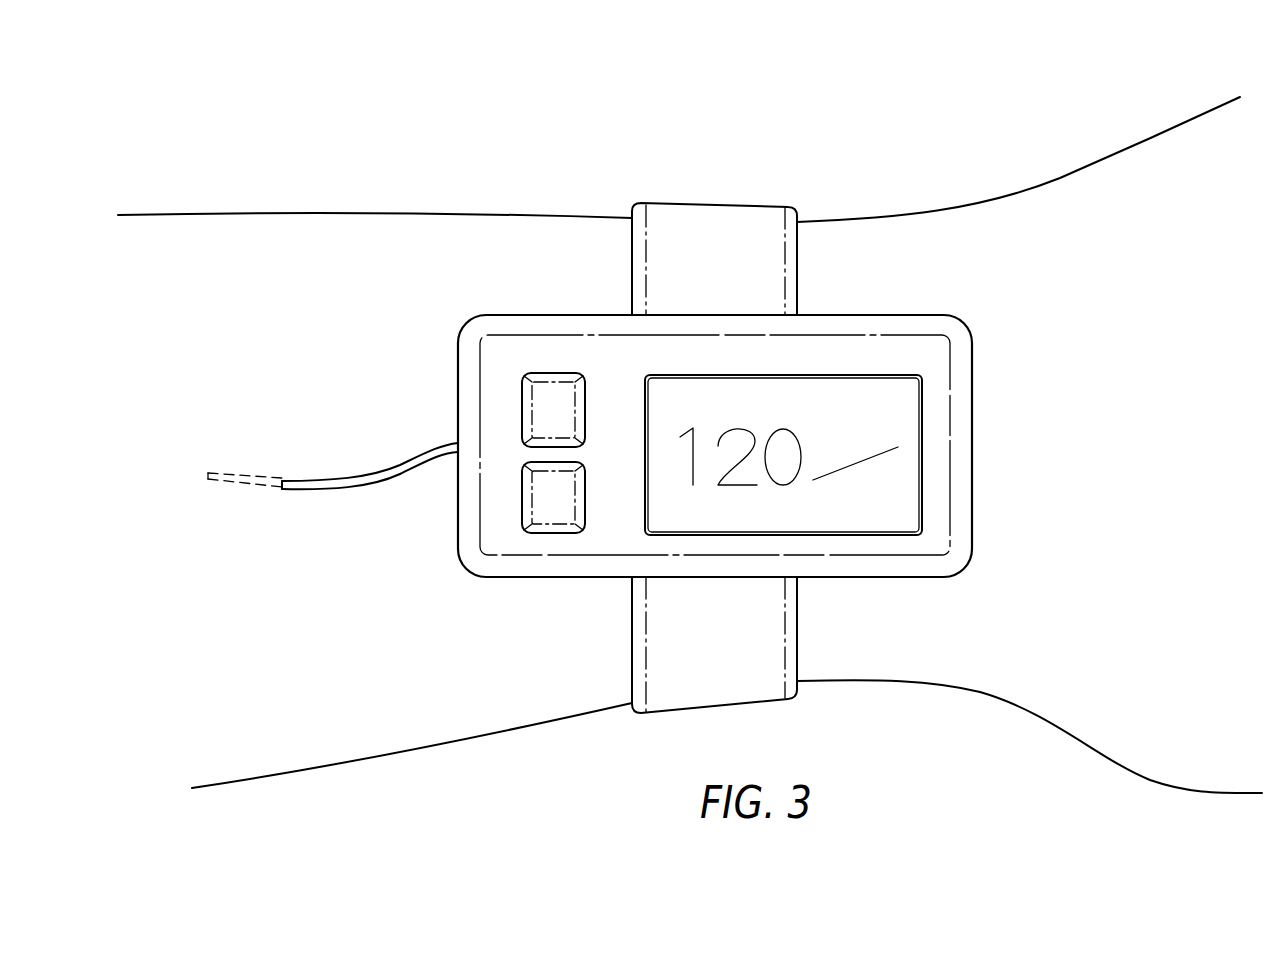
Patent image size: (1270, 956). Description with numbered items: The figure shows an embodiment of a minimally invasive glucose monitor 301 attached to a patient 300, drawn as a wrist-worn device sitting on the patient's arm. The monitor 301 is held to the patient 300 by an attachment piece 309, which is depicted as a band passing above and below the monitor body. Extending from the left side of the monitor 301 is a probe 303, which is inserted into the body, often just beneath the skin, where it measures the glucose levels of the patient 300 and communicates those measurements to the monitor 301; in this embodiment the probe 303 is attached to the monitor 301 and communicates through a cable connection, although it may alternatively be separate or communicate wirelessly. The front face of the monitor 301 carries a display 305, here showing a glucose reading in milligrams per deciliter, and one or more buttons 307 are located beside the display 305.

The patient 300 is at (180, 226).
The minimally invasive glucose monitor 301 is at (866, 305).
The probe 303 is at (348, 478).
The display 305 is at (897, 527).
The buttons 307 is at (527, 503).
The attachment piece 309 is at (690, 200).